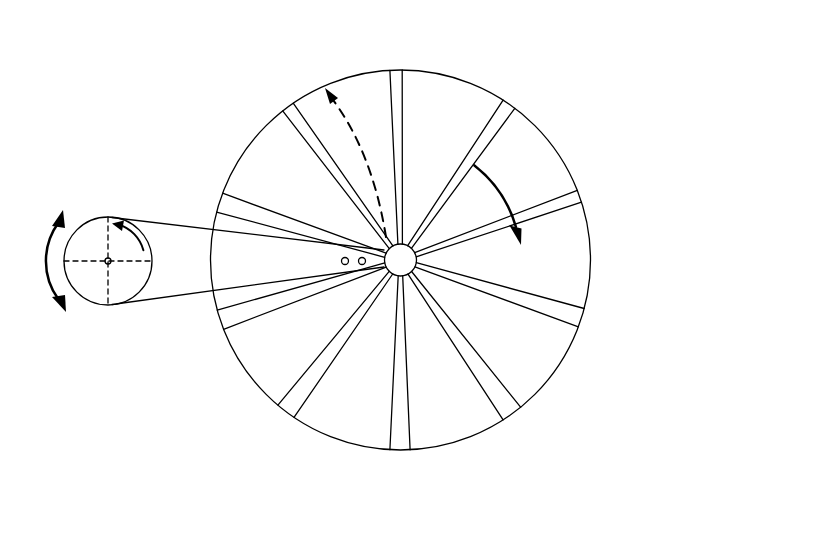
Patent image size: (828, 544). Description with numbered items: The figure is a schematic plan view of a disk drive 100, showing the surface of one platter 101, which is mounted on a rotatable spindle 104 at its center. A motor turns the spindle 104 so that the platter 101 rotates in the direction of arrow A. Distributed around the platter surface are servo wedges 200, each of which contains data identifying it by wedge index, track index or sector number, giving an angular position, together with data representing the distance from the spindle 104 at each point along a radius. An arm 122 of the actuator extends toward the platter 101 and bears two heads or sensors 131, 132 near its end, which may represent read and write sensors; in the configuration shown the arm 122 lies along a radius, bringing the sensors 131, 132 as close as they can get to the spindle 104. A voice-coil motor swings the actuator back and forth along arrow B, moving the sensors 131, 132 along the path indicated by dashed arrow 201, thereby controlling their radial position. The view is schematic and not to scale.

The disk drive 100 is at (131, 29).
The platter 101 is at (337, 78).
The spindle 104 is at (401, 263).
The arm 122 is at (137, 222).
The sensor 131 is at (362, 265).
The sensor 132 is at (345, 265).
The servo wedge 200 is at (401, 80).
The dashed arrow 201 is at (362, 147).